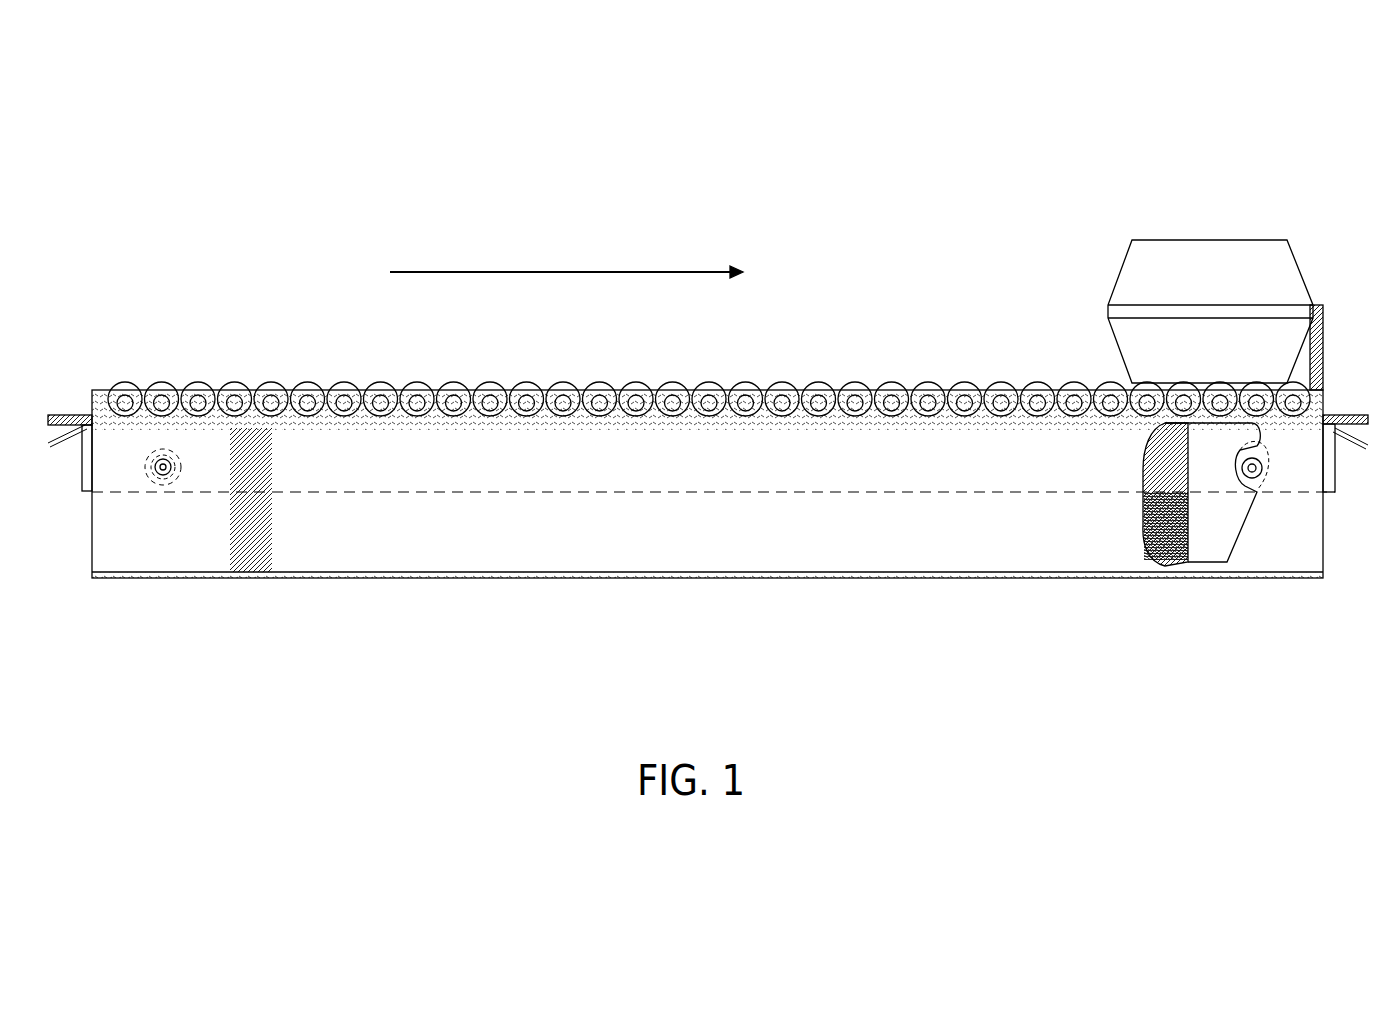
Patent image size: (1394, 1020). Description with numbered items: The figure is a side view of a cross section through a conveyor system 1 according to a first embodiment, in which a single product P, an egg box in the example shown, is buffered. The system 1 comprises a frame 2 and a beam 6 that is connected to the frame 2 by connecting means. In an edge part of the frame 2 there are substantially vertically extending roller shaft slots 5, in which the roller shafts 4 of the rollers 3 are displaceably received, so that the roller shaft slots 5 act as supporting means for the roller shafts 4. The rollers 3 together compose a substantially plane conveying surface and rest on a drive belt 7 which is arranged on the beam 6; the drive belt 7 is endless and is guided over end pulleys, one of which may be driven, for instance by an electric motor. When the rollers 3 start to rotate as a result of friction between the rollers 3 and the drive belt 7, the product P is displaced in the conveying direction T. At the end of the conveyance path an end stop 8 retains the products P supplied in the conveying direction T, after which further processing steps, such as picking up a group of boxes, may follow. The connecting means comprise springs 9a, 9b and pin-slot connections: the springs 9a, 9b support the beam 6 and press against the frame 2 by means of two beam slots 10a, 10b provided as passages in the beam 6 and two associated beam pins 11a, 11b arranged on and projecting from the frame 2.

The conveyor system 1 is at (117, 306).
The frame 2 is at (190, 578).
The rollers 3 is at (276, 386).
The roller shafts 4 is at (280, 392).
The roller shaft slots 5 is at (93, 388).
The beam 6 is at (80, 490).
The drive belt 7 is at (1347, 415).
The end stop 8 is at (1318, 303).
The spring 9a is at (267, 550).
The spring 9b is at (1143, 565).
The beam slot 10a is at (183, 453).
The beam slot 10b is at (1270, 457).
The beam pin 11a is at (163, 475).
The beam pin 11b is at (1252, 468).
The product P is at (1185, 240).
The conveying direction T is at (566, 261).